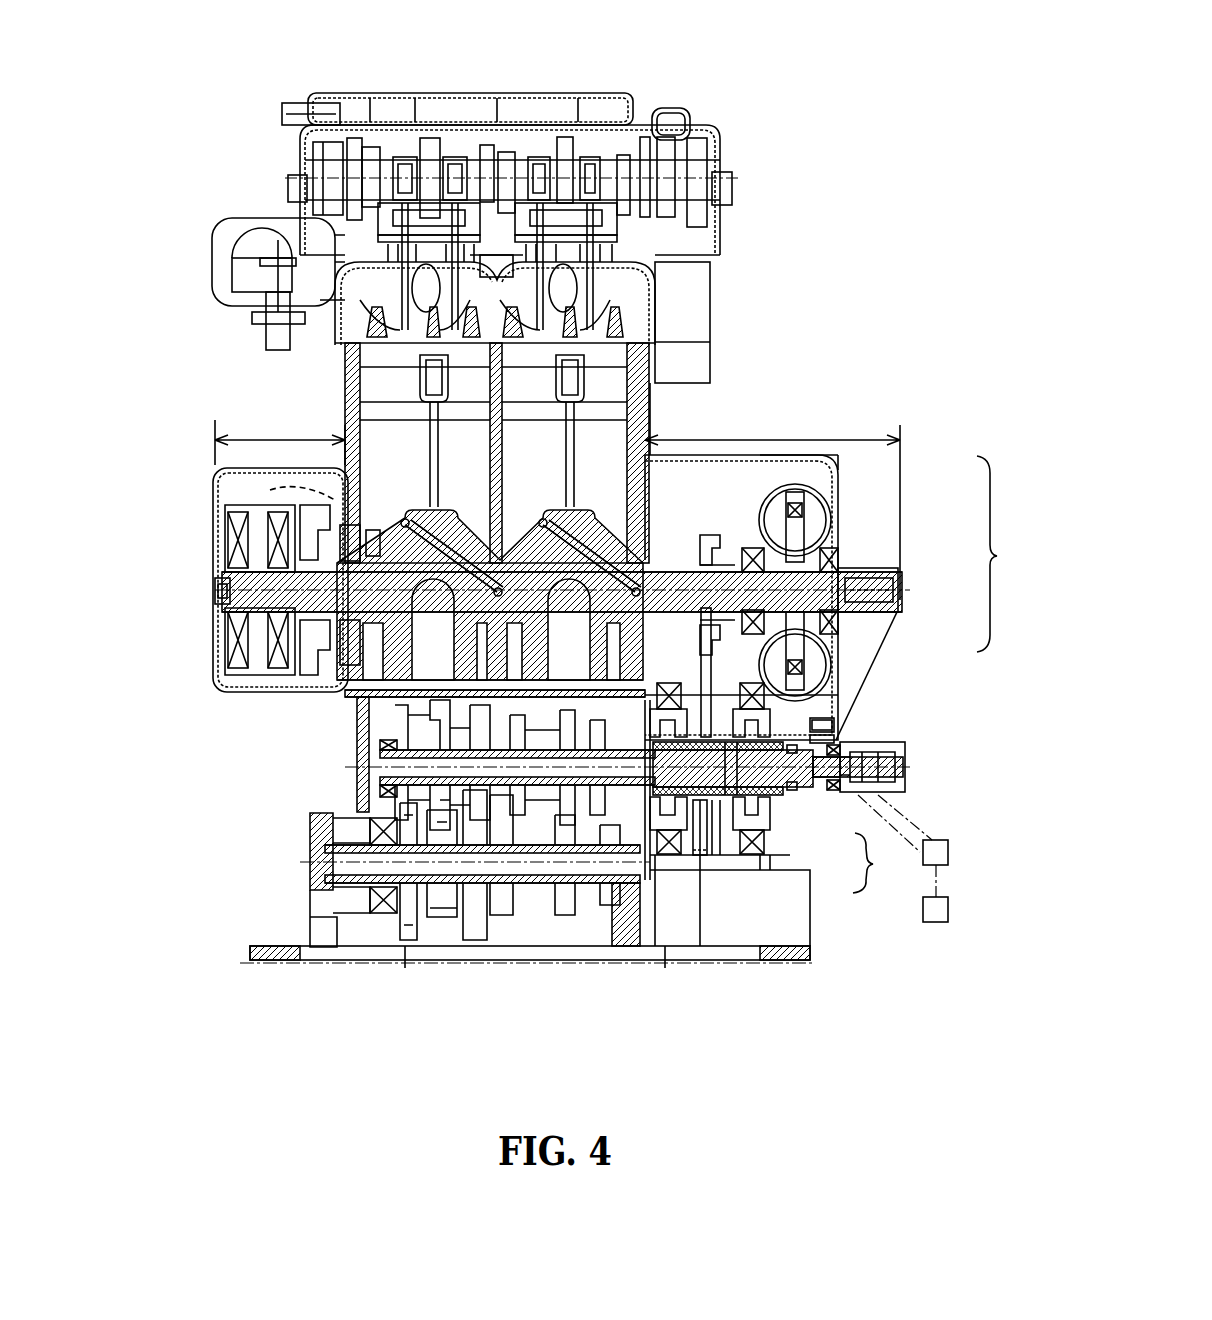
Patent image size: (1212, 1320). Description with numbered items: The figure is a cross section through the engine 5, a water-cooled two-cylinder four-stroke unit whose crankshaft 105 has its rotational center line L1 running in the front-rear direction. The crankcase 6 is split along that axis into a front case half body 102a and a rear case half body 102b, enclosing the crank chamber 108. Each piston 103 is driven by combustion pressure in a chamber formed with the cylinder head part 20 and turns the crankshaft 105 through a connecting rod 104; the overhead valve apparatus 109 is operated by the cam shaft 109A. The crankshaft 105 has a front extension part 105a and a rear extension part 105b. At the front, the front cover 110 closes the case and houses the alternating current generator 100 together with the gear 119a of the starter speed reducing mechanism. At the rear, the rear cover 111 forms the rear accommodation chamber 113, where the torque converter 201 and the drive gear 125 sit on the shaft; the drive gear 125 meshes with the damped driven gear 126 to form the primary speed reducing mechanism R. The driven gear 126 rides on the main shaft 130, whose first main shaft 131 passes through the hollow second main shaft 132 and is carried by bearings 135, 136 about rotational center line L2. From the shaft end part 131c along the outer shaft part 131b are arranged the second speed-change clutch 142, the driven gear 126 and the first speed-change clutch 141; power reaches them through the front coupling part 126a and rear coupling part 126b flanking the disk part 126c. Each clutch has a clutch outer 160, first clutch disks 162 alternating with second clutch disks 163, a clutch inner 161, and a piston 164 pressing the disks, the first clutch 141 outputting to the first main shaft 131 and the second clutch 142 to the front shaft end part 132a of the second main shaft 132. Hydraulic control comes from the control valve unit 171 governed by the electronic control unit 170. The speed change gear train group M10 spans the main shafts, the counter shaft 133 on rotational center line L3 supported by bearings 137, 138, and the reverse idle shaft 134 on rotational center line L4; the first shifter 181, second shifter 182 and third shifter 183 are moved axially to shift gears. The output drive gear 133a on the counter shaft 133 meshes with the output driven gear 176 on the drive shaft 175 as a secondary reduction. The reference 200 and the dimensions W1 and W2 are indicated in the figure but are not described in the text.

The engine 5 is at (824, 250).
The crankcase 6 is at (809, 448).
The cylinder head part 20 is at (703, 302).
The alternating current generator (ACG) 100 is at (205, 609).
The front case half body 102a is at (245, 468).
The rear case half body 102b is at (775, 458).
The piston 103 is at (660, 352).
The connecting rod 104 is at (380, 382).
The crankshaft 105 is at (712, 445).
The front extension part 105a is at (232, 642).
The rear extension part 105b is at (670, 556).
The crank chamber 108 is at (440, 492).
The valve apparatus 109 is at (535, 130).
The cam shaft 109A is at (594, 160).
The front cover 110 is at (252, 700).
The rear cover 111 is at (822, 535).
The rear accommodation chamber 113 is at (748, 462).
The gear 119a is at (258, 492).
The drive gear 125 is at (842, 490).
The driven gear 126 is at (820, 650).
The front coupling part 126a is at (640, 880).
The rear coupling part 126b is at (748, 870).
The disk part 126c is at (696, 855).
The main shaft 130 is at (887, 863).
The first main shaft 131 is at (760, 840).
The outer shaft part 131b is at (770, 890).
The shaft end part 131c is at (903, 770).
The second main shaft 132 is at (755, 860).
The front shaft end part 132a is at (790, 795).
The counter shaft 133 is at (325, 930).
The output drive gear 133a is at (338, 892).
The reverse idle shaft 134 is at (672, 678).
The bearing 135 is at (380, 768).
The bearing 136 is at (600, 895).
The bearing 137 is at (390, 930).
The bearing 138 is at (560, 905).
The first speed-change clutch 141 is at (700, 900).
The second speed-change clutch 142 is at (777, 863).
The clutch outer 160 is at (830, 680).
The clutch inner 161 is at (828, 768).
The first clutch disks 162 is at (822, 725).
The second clutch disks 163 is at (822, 739).
The piston 164 is at (810, 730).
The electronic control unit 170 is at (936, 922).
The control valve unit 171 is at (917, 828).
The drive shaft 175 is at (263, 990).
The output driven gear 176 is at (355, 930).
The first shifter 181 is at (370, 712).
The second shifter 182 is at (520, 950).
The third shifter 183 is at (455, 935).
The transmission unit 200 is at (921, 429).
The torque converter 201 is at (893, 582).
The rotational center line of the crankshaft L1 is at (215, 590).
The rotational center line of the first main shaft L2 is at (345, 764).
The rotational center line of the counter shaft L3 is at (305, 858).
The rotational center line of the reverse idle shaft L4 is at (535, 650).
The speed change gear train group M10 is at (445, 935).
The primary speed reducing mechanism R is at (997, 554).
The width W1 is at (858, 438).
The width W2 is at (247, 407).